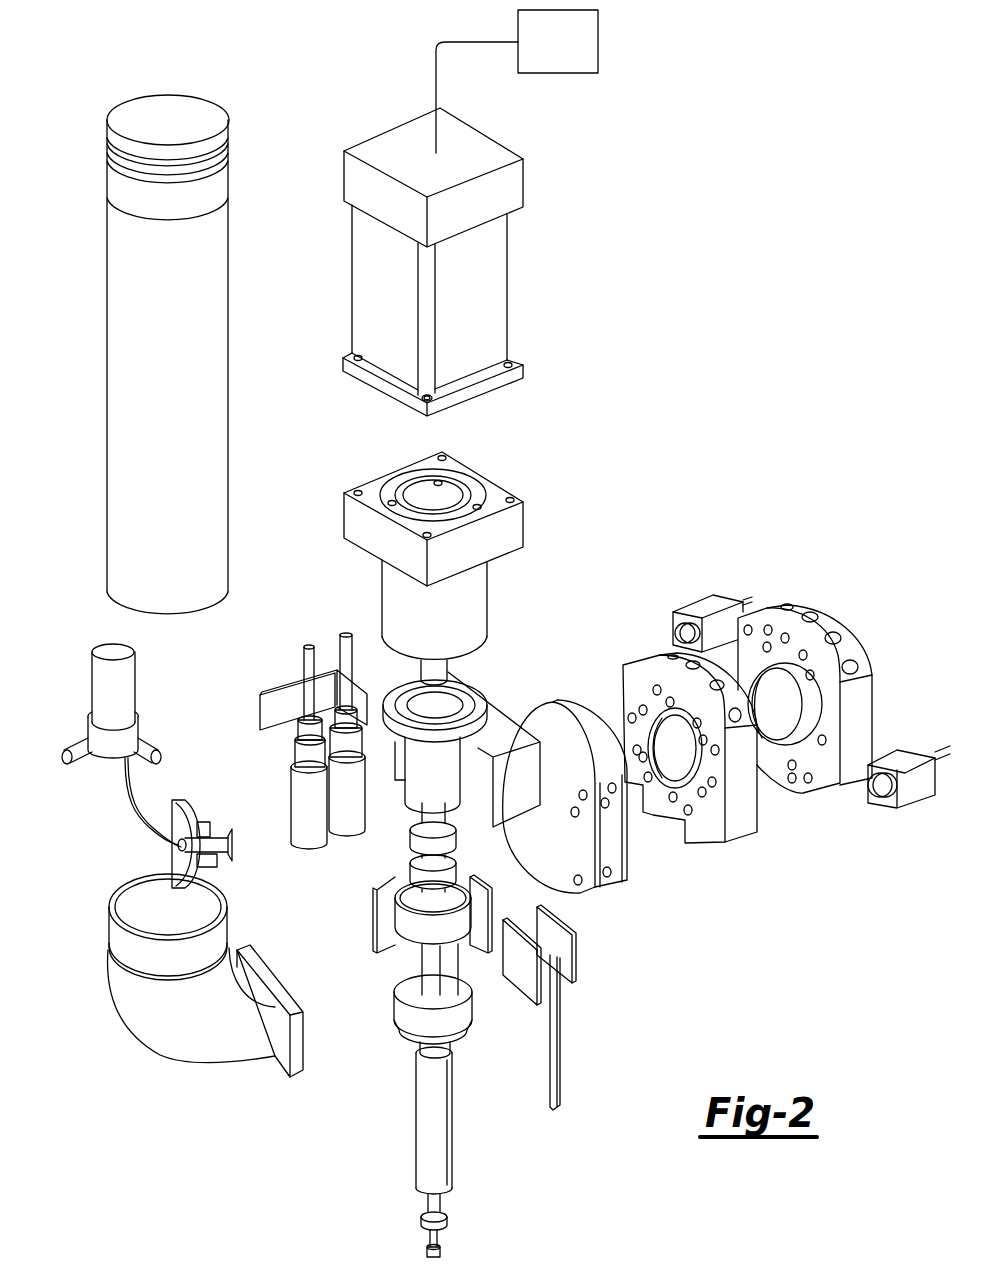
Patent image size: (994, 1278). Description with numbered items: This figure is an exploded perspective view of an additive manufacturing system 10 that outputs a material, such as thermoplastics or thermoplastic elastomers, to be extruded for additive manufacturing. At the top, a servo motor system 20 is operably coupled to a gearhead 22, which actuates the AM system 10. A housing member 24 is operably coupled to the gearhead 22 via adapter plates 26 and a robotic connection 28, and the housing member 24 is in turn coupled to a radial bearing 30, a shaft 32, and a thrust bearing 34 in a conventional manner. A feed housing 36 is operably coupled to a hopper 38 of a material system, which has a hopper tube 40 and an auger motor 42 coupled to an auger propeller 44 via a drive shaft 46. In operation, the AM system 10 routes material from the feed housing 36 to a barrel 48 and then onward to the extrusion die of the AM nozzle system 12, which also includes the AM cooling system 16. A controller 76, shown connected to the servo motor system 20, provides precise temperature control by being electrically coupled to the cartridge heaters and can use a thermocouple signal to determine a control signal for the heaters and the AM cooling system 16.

The additive manufacturing system 10 is at (752, 118).
The AM nozzle system 12 is at (445, 1253).
The AM cooling system 16 is at (305, 788).
The servo motor system 20 is at (495, 297).
The gearhead 22 is at (477, 606).
The housing member 24 is at (448, 765).
The adapter plates 26 is at (615, 835).
The robotic connection 28 is at (795, 612).
The radial bearing 30 is at (408, 842).
The shaft 32 is at (415, 866).
The thrust bearing 34 is at (417, 878).
The feed housing 36 is at (420, 957).
The hopper 38 is at (140, 1022).
The hopper tube 40 is at (131, 252).
The auger motor 42 is at (98, 683).
The auger propeller 44 is at (177, 868).
The drive shaft 46 is at (130, 807).
The barrel 48 is at (447, 1160).
The controller 76 is at (598, 38).